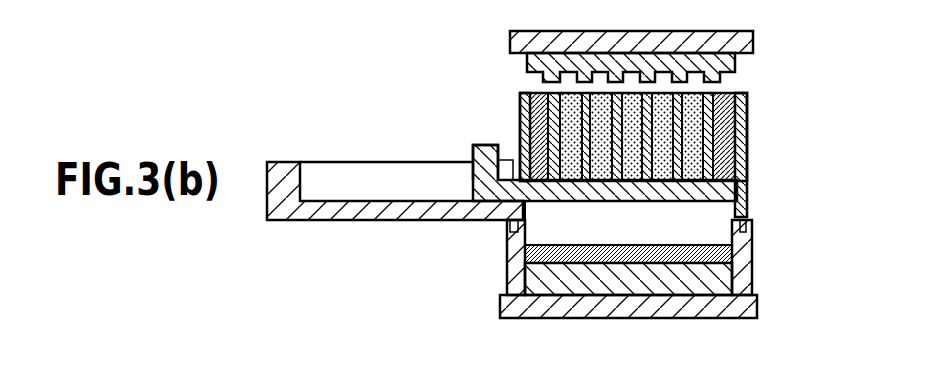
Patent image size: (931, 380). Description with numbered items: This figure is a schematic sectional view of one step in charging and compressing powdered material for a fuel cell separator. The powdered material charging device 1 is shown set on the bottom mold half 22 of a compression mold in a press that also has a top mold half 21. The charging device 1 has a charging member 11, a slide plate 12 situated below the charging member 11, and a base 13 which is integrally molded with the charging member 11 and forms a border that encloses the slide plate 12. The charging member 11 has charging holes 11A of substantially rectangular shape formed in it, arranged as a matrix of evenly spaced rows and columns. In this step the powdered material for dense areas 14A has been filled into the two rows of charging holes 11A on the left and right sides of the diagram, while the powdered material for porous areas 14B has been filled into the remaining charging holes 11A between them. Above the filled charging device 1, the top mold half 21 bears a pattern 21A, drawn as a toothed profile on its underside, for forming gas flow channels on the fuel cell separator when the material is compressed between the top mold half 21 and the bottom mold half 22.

The powdered material charging device 1 is at (364, 78).
The charging member 11 is at (518, 138).
The charging holes 11A is at (740, 91).
The slide plate 12 is at (477, 146).
The base 13 is at (286, 178).
The powdered material for dense areas 14A is at (750, 123).
The powdered material for porous areas 14B is at (700, 157).
The top mold half 21 is at (753, 45).
The pattern 21A is at (525, 84).
The bottom mold half 22 is at (753, 283).